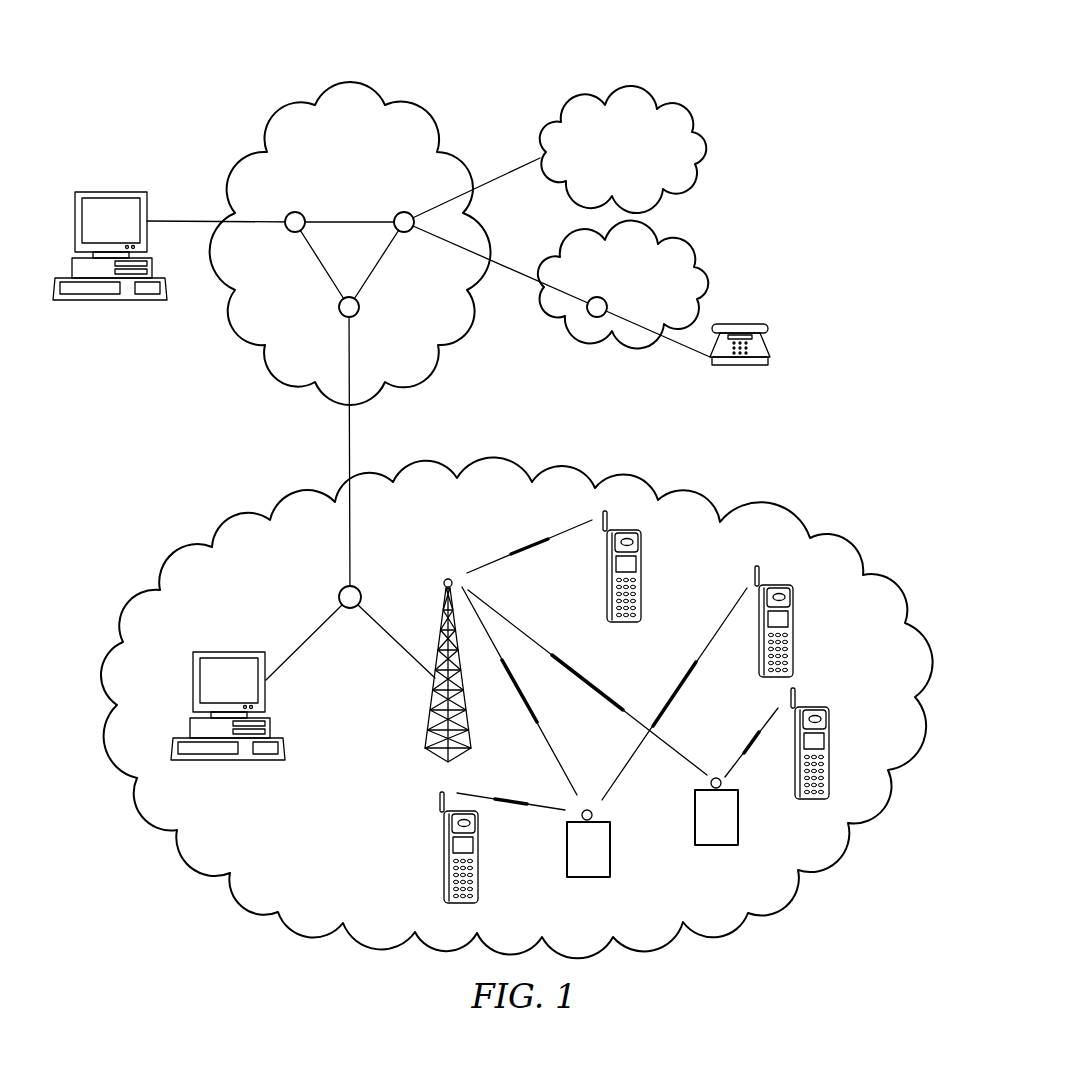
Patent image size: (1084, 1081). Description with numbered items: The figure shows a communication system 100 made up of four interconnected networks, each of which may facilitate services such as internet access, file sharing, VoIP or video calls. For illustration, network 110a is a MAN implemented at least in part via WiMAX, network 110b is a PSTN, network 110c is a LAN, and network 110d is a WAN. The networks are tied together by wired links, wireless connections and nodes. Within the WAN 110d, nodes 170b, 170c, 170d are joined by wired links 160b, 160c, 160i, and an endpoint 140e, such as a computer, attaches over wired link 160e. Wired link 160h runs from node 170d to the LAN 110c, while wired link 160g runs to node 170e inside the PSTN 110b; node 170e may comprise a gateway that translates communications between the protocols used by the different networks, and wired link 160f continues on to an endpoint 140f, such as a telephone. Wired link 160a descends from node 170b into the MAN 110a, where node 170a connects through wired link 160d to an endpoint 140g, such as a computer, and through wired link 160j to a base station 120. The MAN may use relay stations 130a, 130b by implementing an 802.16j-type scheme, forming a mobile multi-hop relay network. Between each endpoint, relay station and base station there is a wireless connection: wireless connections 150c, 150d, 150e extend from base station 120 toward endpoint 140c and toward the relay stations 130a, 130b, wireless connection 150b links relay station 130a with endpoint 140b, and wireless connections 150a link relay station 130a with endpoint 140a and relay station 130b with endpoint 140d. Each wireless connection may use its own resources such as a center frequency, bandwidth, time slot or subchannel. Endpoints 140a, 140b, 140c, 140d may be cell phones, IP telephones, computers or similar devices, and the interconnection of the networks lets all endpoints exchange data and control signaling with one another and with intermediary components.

The communication system 100 is at (670, 52).
The network 110a is at (226, 512).
The network 110b is at (590, 340).
The network 110c is at (708, 150).
The network 110d is at (272, 104).
The base station 120 is at (430, 720).
The relay station 130a is at (588, 880).
The relay station 130b is at (716, 848).
The endpoint 140a is at (440, 850).
The endpoint 140b is at (797, 610).
The endpoint 140c is at (642, 556).
The endpoint 140d is at (834, 732).
The endpoint 140e is at (110, 191).
The endpoint 140f is at (740, 321).
The endpoint 140g is at (228, 651).
The wireless connection 150a is at (748, 730).
The wireless connection 150b is at (706, 638).
The wireless connection 150c is at (502, 552).
The wireless connection 150d is at (538, 738).
The wireless connection 150e is at (676, 762).
The wired link 160a is at (351, 548).
The wired link 160b is at (318, 266).
The wired link 160c is at (378, 266).
The wired link 160d is at (314, 644).
The wired link 160e is at (199, 220).
The wired link 160f is at (689, 350).
The wired link 160g is at (505, 264).
The wired link 160h is at (503, 168).
The wired link 160i is at (362, 221).
The wired link 160j is at (393, 631).
The node 170a is at (339, 596).
The node 170b is at (361, 310).
The node 170c is at (294, 210).
The node 170d is at (404, 210).
The node 170e is at (600, 296).